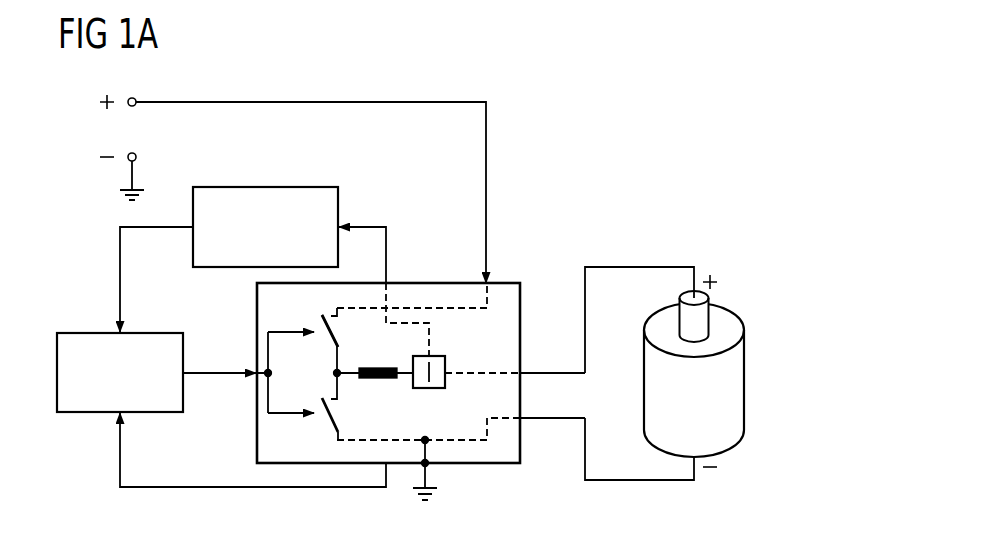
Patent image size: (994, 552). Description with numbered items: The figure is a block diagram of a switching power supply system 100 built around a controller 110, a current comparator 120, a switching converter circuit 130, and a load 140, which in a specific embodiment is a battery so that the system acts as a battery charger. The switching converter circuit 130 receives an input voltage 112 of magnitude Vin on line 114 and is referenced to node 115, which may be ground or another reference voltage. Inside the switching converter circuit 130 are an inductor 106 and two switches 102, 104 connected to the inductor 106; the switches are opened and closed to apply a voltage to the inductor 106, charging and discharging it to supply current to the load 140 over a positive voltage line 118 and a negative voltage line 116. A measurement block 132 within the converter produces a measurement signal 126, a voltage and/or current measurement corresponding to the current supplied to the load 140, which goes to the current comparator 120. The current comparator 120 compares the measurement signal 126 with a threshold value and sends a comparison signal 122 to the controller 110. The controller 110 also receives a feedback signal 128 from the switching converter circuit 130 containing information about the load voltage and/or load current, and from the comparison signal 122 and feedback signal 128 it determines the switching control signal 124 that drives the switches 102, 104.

The switching power supply system 100 is at (624, 115).
The switch 102 is at (334, 337).
The switch 104 is at (332, 427).
The inductor 106 is at (379, 380).
The controller 110 is at (86, 415).
The input voltage 112 is at (133, 128).
The line 114 is at (487, 166).
The node 115 is at (437, 491).
The negative voltage line 116 is at (610, 480).
The positive voltage line 118 is at (640, 265).
The current comparator 120 is at (266, 185).
The comparison signal 122 is at (166, 231).
The switching control signal 124 is at (213, 372).
The measurement signal 126 is at (372, 222).
The feedback signal 128 is at (207, 484).
The switching converter circuit 130 is at (437, 278).
The measurement block 132 is at (447, 385).
The load 140 is at (745, 384).